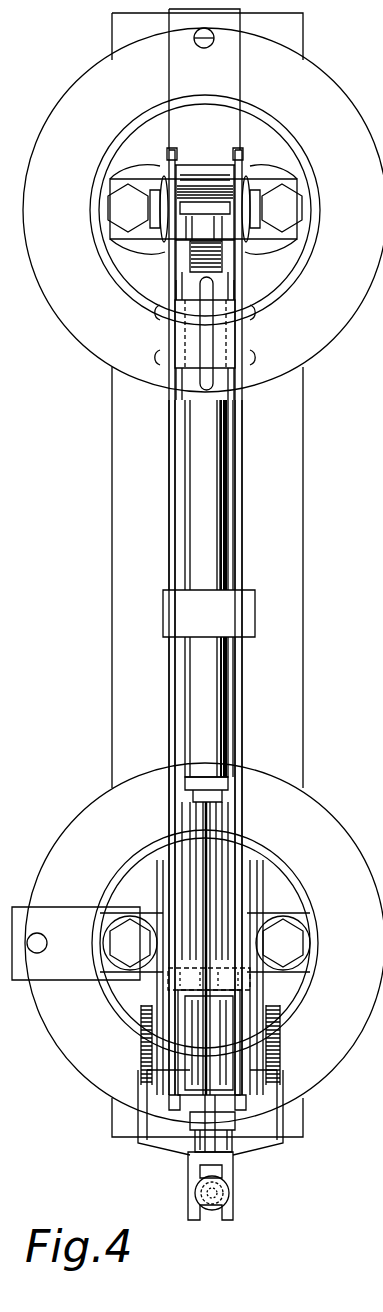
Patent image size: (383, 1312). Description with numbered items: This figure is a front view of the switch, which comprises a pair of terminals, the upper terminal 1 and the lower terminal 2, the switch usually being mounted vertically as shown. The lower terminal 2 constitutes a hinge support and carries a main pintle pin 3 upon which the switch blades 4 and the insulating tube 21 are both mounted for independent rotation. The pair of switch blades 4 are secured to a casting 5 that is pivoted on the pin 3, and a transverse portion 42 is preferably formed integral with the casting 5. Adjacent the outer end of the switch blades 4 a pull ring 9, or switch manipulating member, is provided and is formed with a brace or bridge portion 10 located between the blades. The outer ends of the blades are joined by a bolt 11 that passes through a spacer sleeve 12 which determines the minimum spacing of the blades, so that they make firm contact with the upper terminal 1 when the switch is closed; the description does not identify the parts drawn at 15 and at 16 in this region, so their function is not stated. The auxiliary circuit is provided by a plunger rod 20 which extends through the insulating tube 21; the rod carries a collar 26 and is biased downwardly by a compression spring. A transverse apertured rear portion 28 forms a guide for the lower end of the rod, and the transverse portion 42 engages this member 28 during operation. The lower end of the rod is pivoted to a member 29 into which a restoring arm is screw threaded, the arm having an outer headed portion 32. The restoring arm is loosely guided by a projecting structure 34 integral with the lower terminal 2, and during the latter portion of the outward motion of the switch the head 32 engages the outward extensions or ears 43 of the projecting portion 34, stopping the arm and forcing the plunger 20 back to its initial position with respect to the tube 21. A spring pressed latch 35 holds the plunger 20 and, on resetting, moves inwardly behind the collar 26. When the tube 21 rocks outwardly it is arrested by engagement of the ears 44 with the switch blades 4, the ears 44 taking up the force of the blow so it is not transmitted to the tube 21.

The upper terminal 1 is at (262, 158).
The lower terminal 2 is at (278, 897).
The main pintle pin 3 is at (195, 1030).
The switch blades 4 is at (168, 538).
The casting 5 is at (245, 1030).
The pull ring 9 is at (215, 342).
The brace or bridge portion 10 is at (180, 328).
The bolt 11 is at (275, 208).
The spacer sleeve 12 is at (214, 196).
The bearing plate 15 is at (185, 196).
The threaded stud 16 is at (190, 251).
The plunger rod 20 is at (207, 880).
The insulating tube 21 is at (197, 480).
The collar 26 is at (215, 790).
The transverse apertured rear portion 28 is at (195, 1122).
The member 29 is at (203, 1140).
The headed portion 32 is at (212, 1212).
The projecting structure 34 is at (283, 1082).
The spring pressed latch 35 is at (188, 805).
The transverse portion 42 is at (195, 978).
The ears 43 is at (237, 1175).
The ears 44 is at (163, 613).